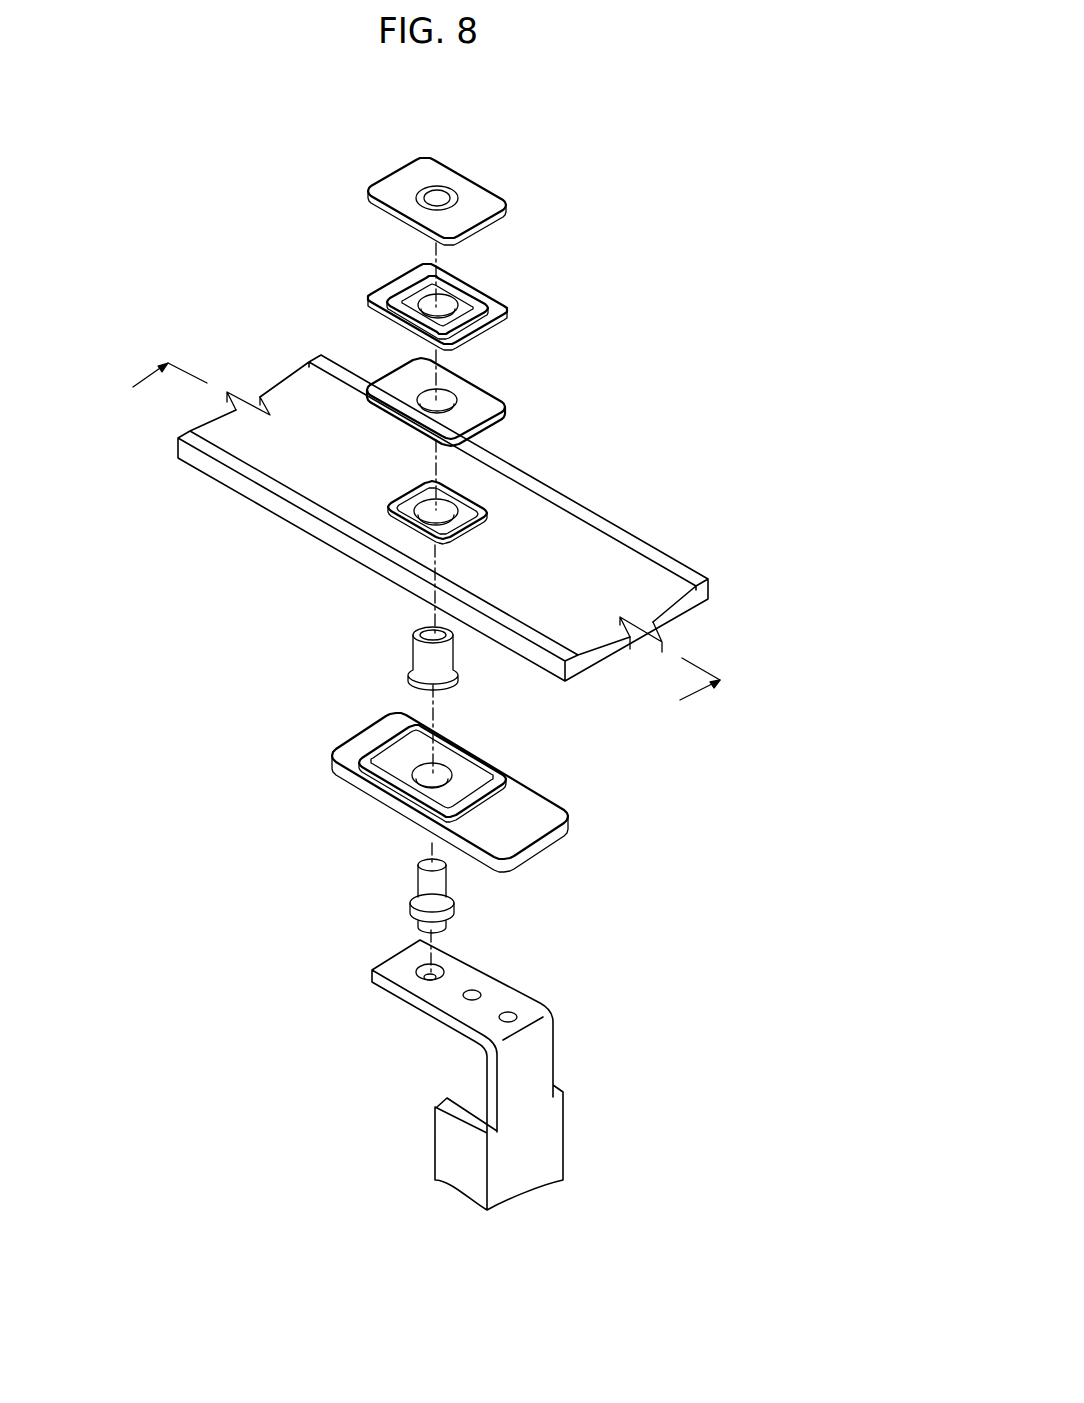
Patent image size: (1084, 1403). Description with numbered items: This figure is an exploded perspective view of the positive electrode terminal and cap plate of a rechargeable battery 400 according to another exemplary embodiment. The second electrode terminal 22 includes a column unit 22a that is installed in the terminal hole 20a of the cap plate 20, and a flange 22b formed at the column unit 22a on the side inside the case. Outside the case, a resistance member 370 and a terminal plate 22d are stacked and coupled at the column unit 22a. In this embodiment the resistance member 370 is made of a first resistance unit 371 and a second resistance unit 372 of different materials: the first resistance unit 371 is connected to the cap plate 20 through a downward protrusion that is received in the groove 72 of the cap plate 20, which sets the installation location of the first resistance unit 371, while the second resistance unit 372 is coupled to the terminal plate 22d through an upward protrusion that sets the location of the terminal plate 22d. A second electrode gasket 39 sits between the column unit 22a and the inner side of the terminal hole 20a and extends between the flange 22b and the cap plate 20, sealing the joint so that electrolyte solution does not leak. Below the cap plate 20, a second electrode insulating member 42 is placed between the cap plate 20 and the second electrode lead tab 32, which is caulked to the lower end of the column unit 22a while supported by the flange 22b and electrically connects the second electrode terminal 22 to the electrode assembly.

The rechargeable battery 400 is at (452, 117).
The terminal plate 22d is at (487, 207).
The resistance member 370 is at (502, 355).
The second resistance unit 372 is at (490, 312).
The first resistance unit 371 is at (475, 402).
The cap plate 20 is at (443, 518).
The terminal hole 20a is at (421, 508).
The groove 72 is at (477, 502).
The second electrode gasket 39 is at (422, 662).
The second electrode insulating member 42 is at (553, 818).
The second electrode terminal 22 is at (442, 898).
The column unit 22a is at (425, 885).
The flange 22b is at (415, 915).
The second electrode lead tab 32 is at (533, 1060).